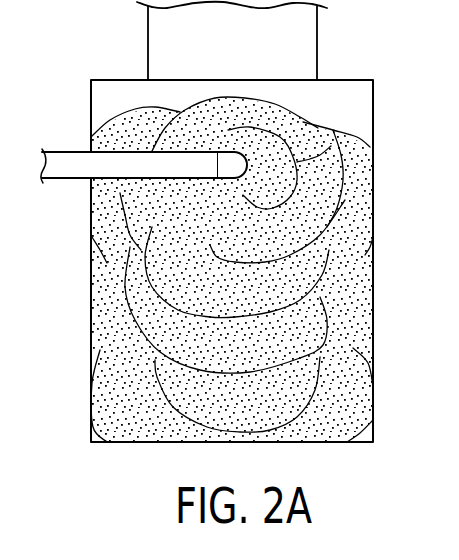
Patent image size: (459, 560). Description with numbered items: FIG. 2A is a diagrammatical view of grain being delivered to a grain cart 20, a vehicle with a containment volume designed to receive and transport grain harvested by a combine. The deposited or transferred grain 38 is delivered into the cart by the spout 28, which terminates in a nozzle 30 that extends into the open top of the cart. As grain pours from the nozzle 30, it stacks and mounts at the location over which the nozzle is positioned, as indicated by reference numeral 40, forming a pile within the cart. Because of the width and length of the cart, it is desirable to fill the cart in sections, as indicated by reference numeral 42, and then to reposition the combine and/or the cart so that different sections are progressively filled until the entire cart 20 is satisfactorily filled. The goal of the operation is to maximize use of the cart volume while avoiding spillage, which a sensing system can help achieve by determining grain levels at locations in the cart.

The grain cart 20 is at (155, 445).
The spout 28 is at (65, 147).
The nozzle 30 is at (247, 150).
The transferred grain 38 is at (310, 268).
The stacked and mounted grain 40 is at (331, 146).
The section of the cart 42 is at (80, 223).